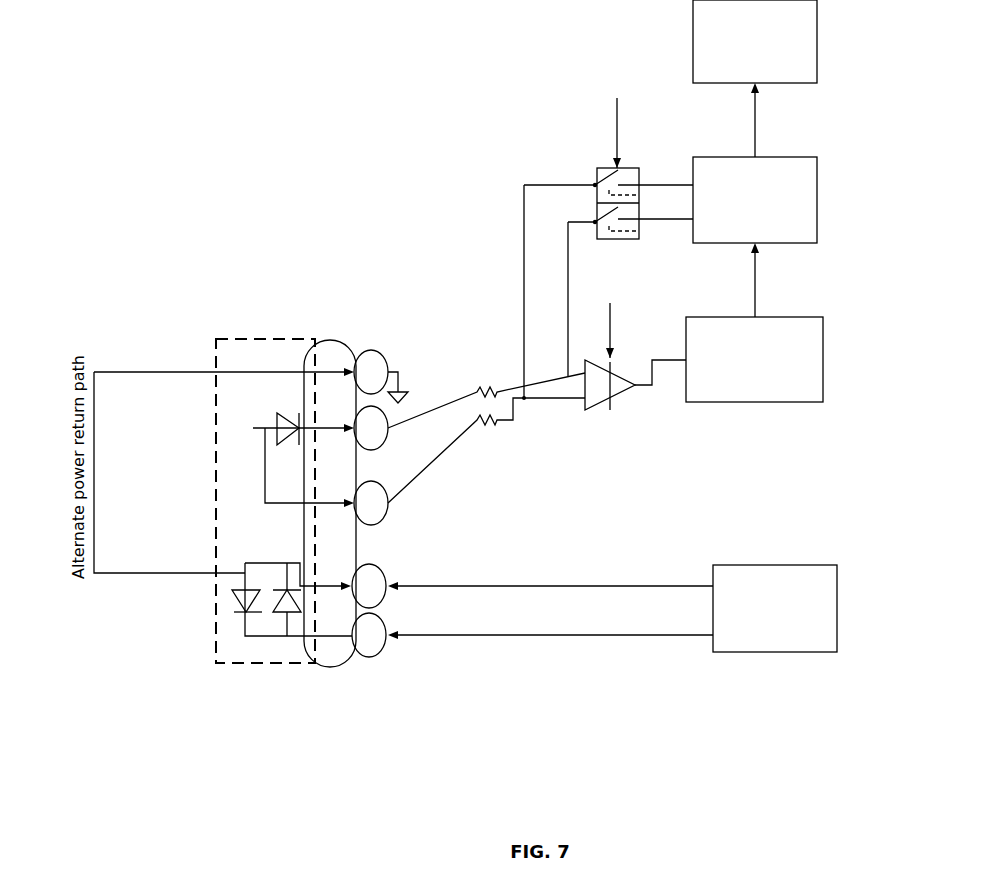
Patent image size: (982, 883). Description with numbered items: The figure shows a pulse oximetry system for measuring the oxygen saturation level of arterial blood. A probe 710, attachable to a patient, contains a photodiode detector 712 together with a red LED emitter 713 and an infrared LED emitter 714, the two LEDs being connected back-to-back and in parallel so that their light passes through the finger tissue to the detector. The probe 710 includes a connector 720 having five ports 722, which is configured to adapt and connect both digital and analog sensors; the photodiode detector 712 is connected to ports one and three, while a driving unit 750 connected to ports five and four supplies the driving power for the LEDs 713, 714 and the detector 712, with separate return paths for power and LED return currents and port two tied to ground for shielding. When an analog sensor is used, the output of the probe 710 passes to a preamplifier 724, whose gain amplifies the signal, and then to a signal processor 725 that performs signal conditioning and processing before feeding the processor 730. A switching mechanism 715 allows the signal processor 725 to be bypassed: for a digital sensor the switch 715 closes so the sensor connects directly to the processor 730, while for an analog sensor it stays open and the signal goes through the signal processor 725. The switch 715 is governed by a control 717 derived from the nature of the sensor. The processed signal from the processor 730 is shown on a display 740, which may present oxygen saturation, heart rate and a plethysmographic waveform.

The probe 710 is at (257, 337).
The photodiode detector 712 is at (263, 412).
The red LED emitter 713 is at (243, 620).
The infrared LED emitter 714 is at (287, 615).
The switching mechanism 715 is at (585, 163).
The control 717 is at (627, 113).
The connector 720 is at (332, 338).
The ports 722 is at (372, 657).
The preamplifier 724 is at (625, 397).
The signal processor 725 is at (754, 359).
The processor 730 is at (755, 200).
The display 740 is at (755, 41).
The driving unit 750 is at (775, 608).